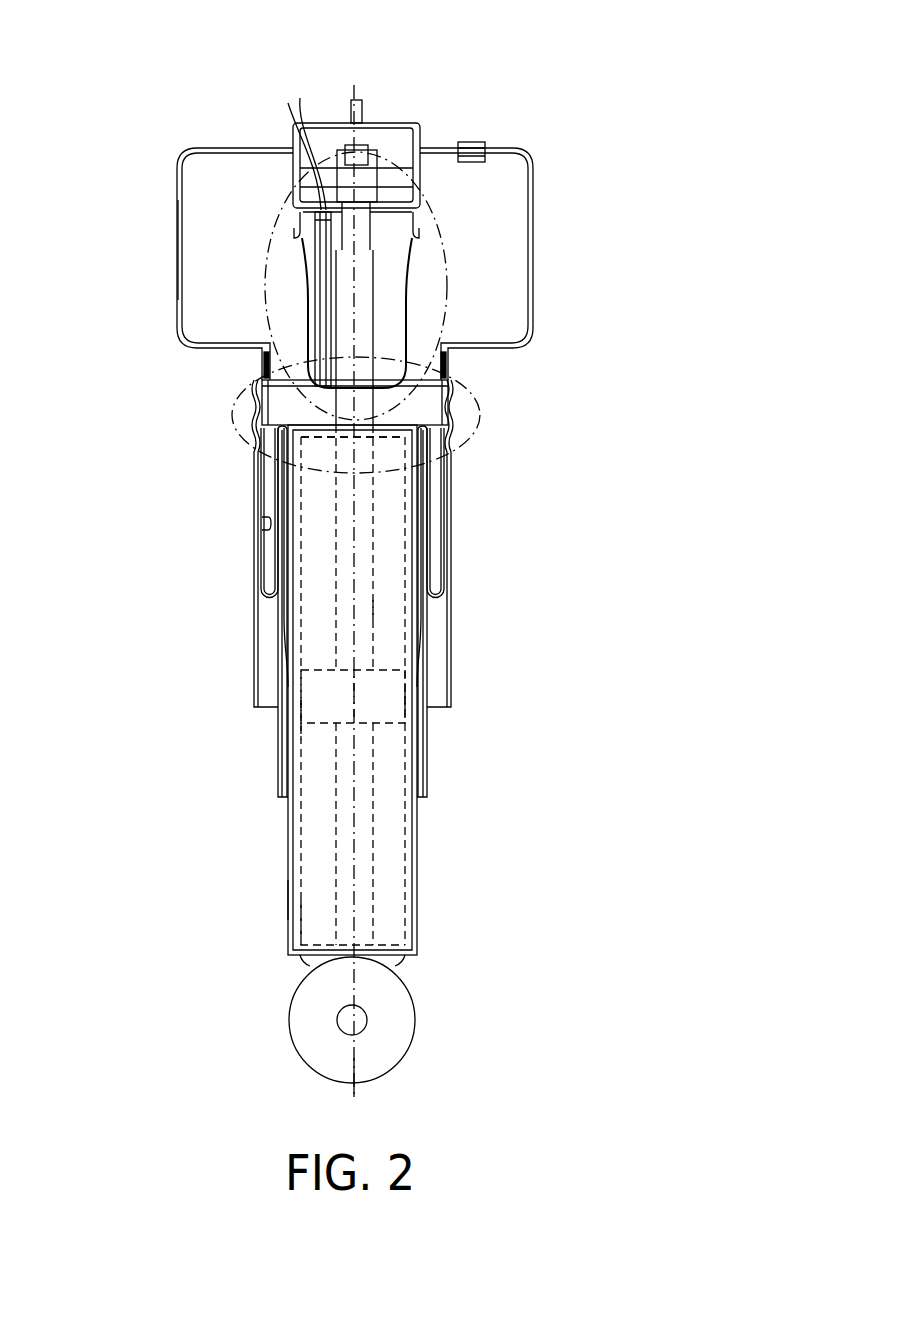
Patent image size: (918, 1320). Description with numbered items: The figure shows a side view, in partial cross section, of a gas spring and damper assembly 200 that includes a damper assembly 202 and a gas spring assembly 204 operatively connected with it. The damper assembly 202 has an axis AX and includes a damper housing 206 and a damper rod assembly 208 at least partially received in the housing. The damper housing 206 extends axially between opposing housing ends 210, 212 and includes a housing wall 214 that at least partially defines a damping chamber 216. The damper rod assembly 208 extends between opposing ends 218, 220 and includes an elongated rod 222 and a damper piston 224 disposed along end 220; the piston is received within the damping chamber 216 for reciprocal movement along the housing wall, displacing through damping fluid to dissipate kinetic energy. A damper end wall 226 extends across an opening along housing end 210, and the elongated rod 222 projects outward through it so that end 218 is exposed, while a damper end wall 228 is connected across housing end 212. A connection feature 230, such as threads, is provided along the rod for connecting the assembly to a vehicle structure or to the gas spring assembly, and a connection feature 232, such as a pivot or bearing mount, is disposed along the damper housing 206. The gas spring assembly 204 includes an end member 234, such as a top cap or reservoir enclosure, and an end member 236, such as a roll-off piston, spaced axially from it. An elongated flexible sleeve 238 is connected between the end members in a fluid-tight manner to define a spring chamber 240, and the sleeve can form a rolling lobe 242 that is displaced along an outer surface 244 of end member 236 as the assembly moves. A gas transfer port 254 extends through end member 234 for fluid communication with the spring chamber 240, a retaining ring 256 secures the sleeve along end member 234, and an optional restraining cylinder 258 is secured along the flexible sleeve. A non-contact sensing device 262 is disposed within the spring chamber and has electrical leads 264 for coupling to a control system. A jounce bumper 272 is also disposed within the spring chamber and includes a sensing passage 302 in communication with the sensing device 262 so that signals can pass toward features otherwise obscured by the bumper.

The gas spring and damper assembly 200 is at (603, 292).
The damper assembly 202 is at (270, 842).
The gas spring assembly 204 is at (548, 173).
The damper housing 206 is at (421, 845).
The damper rod assembly 208 is at (333, 568).
The housing end 210 is at (472, 480).
The housing end 212 is at (426, 920).
The housing wall 214 is at (292, 893).
The damping chamber 216 is at (332, 914).
The end of damper rod assembly 218 is at (380, 250).
The end of damper rod assembly 220 is at (298, 724).
The elongated rod 222 is at (375, 607).
The damper piston 224 is at (432, 698).
The damper end wall 226 is at (323, 432).
The damper end wall 228 is at (300, 958).
The connection feature 230 is at (388, 150).
The connection feature 232 is at (417, 1020).
The end member 234 is at (178, 262).
The end member 236 is at (281, 775).
The elongated flexible sleeve 238 is at (262, 523).
The spring chamber 240 is at (440, 417).
The rolling lobe 242 is at (267, 601).
The outer surface 244 is at (387, 698).
The gas transfer passage or port 254 is at (480, 143).
The retaining ring 256 is at (450, 366).
The restraining cylinder 258 is at (258, 660).
The non-contact sensing device 262 is at (302, 212).
The electrical conductors or leads 264 is at (293, 103).
The jounce bumper 272 is at (415, 294).
The sensing passage 302 is at (318, 308).
The axis AX is at (354, 1058).